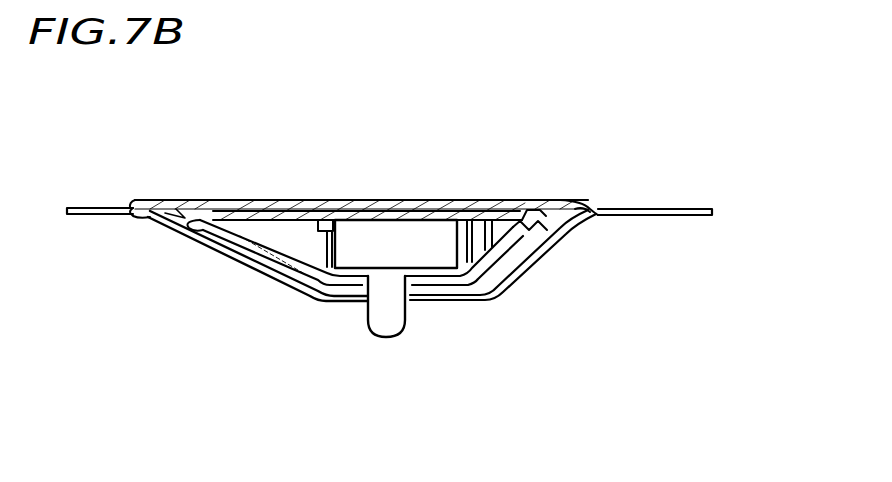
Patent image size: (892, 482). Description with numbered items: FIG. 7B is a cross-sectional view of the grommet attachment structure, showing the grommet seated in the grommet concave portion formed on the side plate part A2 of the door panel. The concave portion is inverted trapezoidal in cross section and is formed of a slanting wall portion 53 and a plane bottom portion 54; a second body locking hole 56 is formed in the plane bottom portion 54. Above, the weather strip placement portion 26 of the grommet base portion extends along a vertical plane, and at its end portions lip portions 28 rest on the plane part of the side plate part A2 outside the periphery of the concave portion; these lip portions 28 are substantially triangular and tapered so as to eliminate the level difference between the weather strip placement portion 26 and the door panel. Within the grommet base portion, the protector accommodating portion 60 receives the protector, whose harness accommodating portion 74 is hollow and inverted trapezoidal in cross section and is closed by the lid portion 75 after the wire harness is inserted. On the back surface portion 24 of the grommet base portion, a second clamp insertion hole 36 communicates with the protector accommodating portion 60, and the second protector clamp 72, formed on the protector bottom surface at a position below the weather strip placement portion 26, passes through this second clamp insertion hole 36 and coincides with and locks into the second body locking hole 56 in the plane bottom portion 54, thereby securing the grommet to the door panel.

The side plate part A2 is at (690, 209).
The lip portion 28 is at (125, 208).
The weather strip placement portion 26 is at (266, 200).
The lid portion 75 is at (370, 213).
The harness accommodating portion 74 is at (407, 242).
The slanting wall portion 53 is at (232, 260).
The protector accommodating portion 60 is at (292, 238).
The second clamp insertion hole 36 is at (356, 297).
The second protector clamp 72 is at (386, 322).
The second body locking hole 56 is at (410, 302).
The plane bottom portion 54 is at (445, 300).
The back surface portion 24 is at (512, 266).